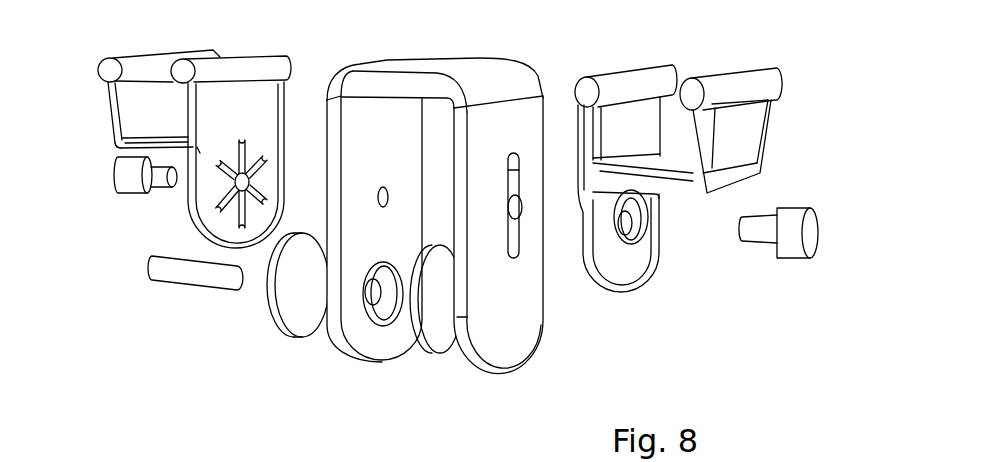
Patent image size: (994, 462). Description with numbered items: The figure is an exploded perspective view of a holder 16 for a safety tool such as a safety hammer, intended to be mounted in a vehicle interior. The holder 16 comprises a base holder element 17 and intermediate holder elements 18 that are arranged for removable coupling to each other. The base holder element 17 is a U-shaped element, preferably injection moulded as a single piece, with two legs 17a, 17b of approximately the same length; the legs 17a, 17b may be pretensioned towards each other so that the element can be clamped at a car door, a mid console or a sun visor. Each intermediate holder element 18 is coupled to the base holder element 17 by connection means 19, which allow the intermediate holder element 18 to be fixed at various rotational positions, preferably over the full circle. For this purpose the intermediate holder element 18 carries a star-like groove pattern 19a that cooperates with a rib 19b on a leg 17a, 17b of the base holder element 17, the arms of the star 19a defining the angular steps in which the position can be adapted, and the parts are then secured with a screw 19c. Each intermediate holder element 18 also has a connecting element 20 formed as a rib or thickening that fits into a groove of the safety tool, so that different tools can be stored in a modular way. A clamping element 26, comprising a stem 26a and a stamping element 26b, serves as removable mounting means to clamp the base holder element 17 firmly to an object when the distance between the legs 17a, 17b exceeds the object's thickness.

The holder 16 is at (138, 39).
The base holder element 17 is at (414, 213).
The leg of the base holder element 17a is at (498, 213).
The leg of the base holder element 17b is at (379, 346).
The intermediate holder element 18 is at (422, 161).
The connection means 19 is at (223, 325).
The star-like groove pattern 19a is at (242, 140).
The rib 19b is at (513, 160).
The screw 19c is at (125, 176).
The connecting element 20 is at (630, 80).
The clamping element 26 is at (248, 350).
The stem 26a is at (192, 290).
The stamping element 26b is at (443, 344).